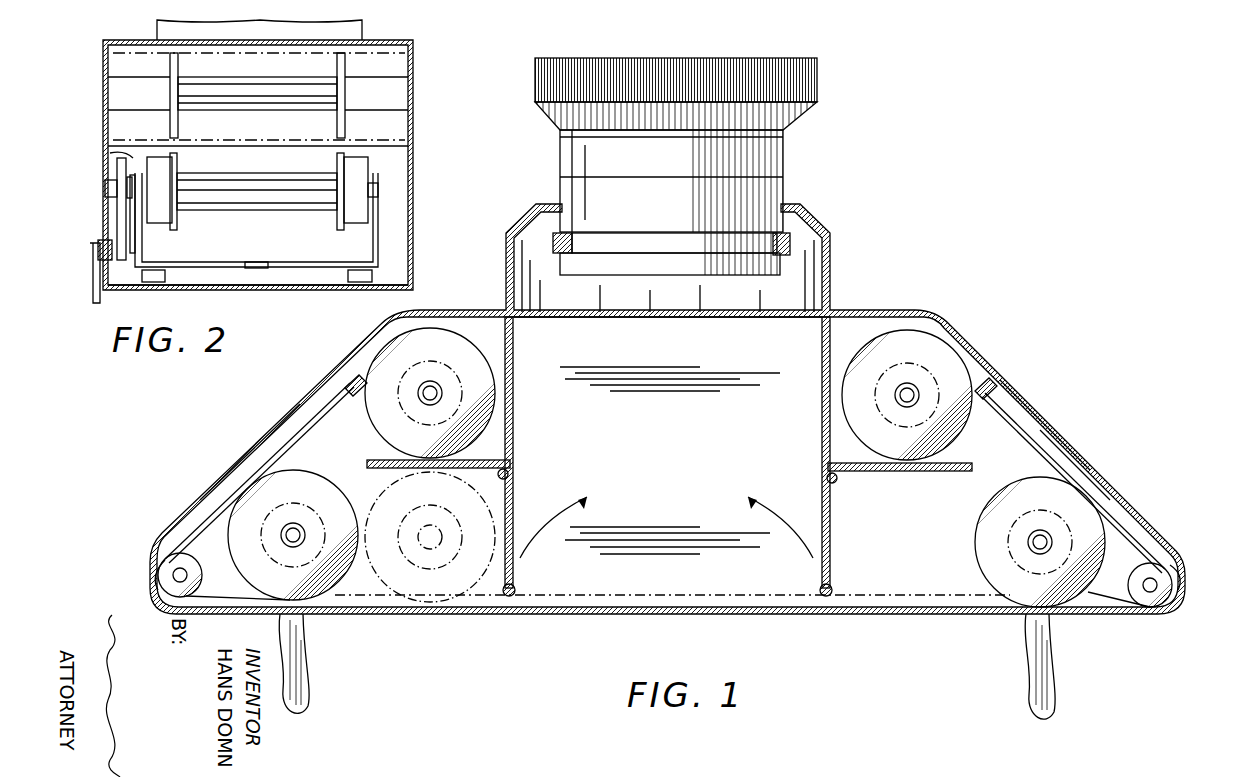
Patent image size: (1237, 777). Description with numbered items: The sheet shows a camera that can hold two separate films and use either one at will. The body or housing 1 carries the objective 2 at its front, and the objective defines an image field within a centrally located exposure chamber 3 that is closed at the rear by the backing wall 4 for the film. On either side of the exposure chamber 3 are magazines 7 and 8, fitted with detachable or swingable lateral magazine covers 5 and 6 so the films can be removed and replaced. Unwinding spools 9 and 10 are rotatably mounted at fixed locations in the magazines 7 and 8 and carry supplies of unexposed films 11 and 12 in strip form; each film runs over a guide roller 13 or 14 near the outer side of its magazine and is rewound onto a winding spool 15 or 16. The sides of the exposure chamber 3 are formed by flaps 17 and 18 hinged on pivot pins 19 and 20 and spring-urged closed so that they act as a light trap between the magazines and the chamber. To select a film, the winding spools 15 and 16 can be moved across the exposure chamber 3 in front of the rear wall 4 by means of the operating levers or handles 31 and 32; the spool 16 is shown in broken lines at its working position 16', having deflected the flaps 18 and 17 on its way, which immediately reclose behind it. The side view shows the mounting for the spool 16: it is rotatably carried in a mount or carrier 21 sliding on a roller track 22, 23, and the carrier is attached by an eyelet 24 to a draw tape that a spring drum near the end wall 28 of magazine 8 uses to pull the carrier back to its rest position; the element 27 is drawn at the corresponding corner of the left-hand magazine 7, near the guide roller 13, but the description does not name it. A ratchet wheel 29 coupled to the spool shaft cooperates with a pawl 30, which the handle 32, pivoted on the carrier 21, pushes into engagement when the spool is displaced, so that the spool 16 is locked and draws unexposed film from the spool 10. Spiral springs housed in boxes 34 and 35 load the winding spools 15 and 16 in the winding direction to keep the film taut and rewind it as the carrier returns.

In FIG. 1, the body or housing 1 is at (845, 312).
In FIG. 2, the body or housing 1 is at (412, 66).
In FIG. 1, the objective 2 is at (560, 155).
In FIG. 1, the exposure chamber 3 is at (740, 600).
In FIG. 1, the backing wall 4 is at (880, 610).
In FIG. 2, the backing wall 4 is at (243, 288).
In FIG. 1, the lateral magazine cover 5 is at (295, 408).
In FIG. 1, the lateral magazine cover 6 is at (1045, 418).
In FIG. 1, the magazine 7 is at (332, 408).
In FIG. 1, the magazine 8 is at (1065, 455).
In FIG. 1, the unwinding spool 9 is at (445, 330).
In FIG. 1, the unwinding spool 10 is at (915, 340).
In FIG. 2, the unwinding spool 10 is at (308, 92).
In FIG. 1, the unexposed film 11 is at (268, 448).
In FIG. 1, the unexposed film 12 is at (1010, 400).
In FIG. 1, the guide roller 13 is at (158, 580).
In FIG. 1, the guide roller 14 is at (1178, 590).
In FIG. 1, the winding spool 15 is at (332, 600).
In FIG. 1, the winding spool 16 is at (1040, 556).
In FIG. 2, the winding spool 16 is at (257, 197).
In FIG. 1, the working position 16' is at (430, 558).
In FIG. 1, the flap 17 is at (512, 600).
In FIG. 1, the flap 18 is at (818, 596).
In FIG. 1, the pivot pin 19 is at (513, 475).
In FIG. 1, the pivot pin 20 is at (822, 478).
In FIG. 2, the mount or carrier 21 is at (378, 250).
In FIG. 2, the roller track 22 is at (143, 290).
In FIG. 2, the roller track 23 is at (362, 290).
In FIG. 2, the eyelet 24 is at (258, 262).
In FIG. 1, the left spring 27 is at (170, 540).
In FIG. 1, the end wall 28 is at (1168, 550).
In FIG. 2, the ratchet wheel 29 is at (118, 168).
In FIG. 2, the pawl 30 is at (118, 230).
In FIG. 1, the operating lever or handle 31 is at (310, 676).
In FIG. 1, the operating lever or handle 32 is at (1024, 690).
In FIG. 2, the operating lever or handle 32 is at (92, 292).
In FIG. 2, the spring box 34 is at (118, 157).
In FIG. 2, the spring box 35 is at (372, 208).